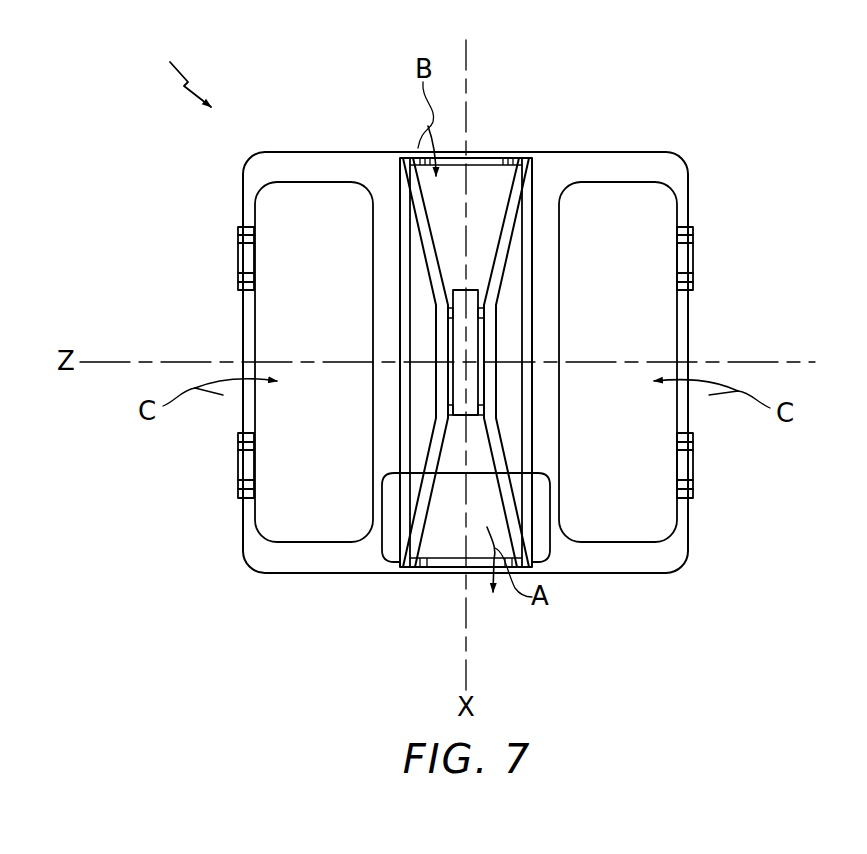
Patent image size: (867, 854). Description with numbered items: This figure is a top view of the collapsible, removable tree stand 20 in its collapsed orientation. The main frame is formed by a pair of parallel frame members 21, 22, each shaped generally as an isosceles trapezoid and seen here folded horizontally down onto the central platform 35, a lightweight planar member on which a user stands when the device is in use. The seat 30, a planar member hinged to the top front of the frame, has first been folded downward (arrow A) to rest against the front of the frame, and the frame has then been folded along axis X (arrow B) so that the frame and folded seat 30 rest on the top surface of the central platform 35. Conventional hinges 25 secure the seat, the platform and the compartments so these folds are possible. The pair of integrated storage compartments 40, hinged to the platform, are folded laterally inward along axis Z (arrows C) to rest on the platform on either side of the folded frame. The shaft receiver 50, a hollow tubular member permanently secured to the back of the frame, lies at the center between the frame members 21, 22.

The collapsible, removable stand 20 is at (174, 71).
The frame member 21 is at (412, 198).
The frame member 22 is at (530, 193).
The hinge 25 is at (246, 260).
The seat 30 is at (437, 532).
The central platform 35 is at (612, 574).
The storage compartment 40 is at (330, 328).
The shaft receiver 50 is at (472, 300).